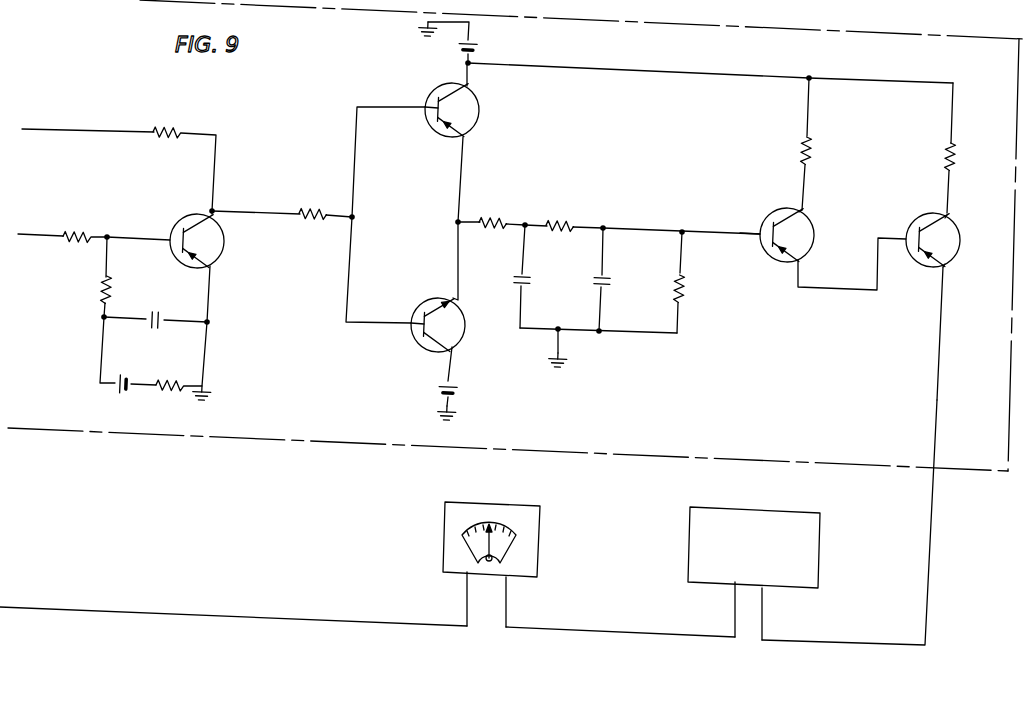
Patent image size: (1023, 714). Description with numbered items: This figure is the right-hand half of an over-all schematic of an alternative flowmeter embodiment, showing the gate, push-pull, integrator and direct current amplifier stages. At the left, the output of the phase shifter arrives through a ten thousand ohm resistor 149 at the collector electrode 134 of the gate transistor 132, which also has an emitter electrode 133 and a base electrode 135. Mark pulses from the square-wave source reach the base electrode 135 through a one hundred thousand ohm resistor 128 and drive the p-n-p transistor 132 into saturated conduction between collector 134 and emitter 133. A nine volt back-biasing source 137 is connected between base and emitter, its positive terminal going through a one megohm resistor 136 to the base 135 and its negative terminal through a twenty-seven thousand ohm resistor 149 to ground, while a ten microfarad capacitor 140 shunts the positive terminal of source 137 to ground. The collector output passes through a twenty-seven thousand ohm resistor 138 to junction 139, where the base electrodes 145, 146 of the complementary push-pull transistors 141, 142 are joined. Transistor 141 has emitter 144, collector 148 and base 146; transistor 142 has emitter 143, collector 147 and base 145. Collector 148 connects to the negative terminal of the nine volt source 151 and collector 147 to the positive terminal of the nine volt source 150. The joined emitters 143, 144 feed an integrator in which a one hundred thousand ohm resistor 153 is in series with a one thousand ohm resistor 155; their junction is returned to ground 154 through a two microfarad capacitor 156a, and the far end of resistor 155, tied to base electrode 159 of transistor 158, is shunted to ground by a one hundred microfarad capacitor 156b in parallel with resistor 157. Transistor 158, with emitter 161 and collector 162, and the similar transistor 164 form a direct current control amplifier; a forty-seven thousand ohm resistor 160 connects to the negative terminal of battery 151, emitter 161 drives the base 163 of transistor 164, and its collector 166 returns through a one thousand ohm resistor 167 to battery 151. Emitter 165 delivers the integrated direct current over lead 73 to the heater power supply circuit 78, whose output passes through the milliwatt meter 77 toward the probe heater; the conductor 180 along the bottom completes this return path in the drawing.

The lead 73 is at (934, 538).
The milliwatt meter 77 is at (535, 532).
The heater power supply circuit 78 is at (815, 547).
The 100,000 ohm resistor 128 is at (80, 232).
The transistor 132 is at (194, 214).
The emitter electrode 133 is at (218, 260).
The collector electrode 134 is at (224, 222).
The base electrode 135 is at (139, 236).
The one megohm resistor 136 is at (100, 289).
The back-biasing source 137 is at (118, 390).
The 27,000 ohm resistor 138 is at (315, 222).
The junction 139 is at (351, 212).
The 10 microfarad capacitor 140 is at (160, 312).
The transistor 141 is at (431, 93).
The transistor 142 is at (420, 341).
The emitter electrode 143 is at (437, 300).
The emitter electrode 144 is at (451, 138).
The base electrode 145 is at (362, 326).
The base electrode 146 is at (428, 119).
The collector electrode 147 is at (458, 348).
The collector electrode 148 is at (478, 101).
The resistor 149 is at (165, 130).
The nine volt source 150 is at (442, 389).
The nine volt source 151 is at (462, 47).
The 100,000 ohm resistor 153 is at (499, 217).
The ground 154 is at (568, 362).
The 1000 ohm resistor 155 is at (560, 220).
The two microfarad capacitor 156a is at (514, 278).
The 100 microfarad capacitor 156b is at (608, 283).
The resistor 157 is at (688, 291).
The transistor 158 is at (786, 208).
The base electrode 159 is at (779, 247).
The 47,000 ohm resistor 160 is at (817, 153).
The emitter electrode 161 is at (802, 270).
The collector electrode 162 is at (800, 217).
The base 163 is at (899, 238).
The transistor 164 is at (930, 270).
The emitter electrode 165 is at (950, 263).
The collector electrode 166 is at (953, 223).
The 1000 ohm resistor 167 is at (962, 153).
The conductor 180 is at (18, 607).